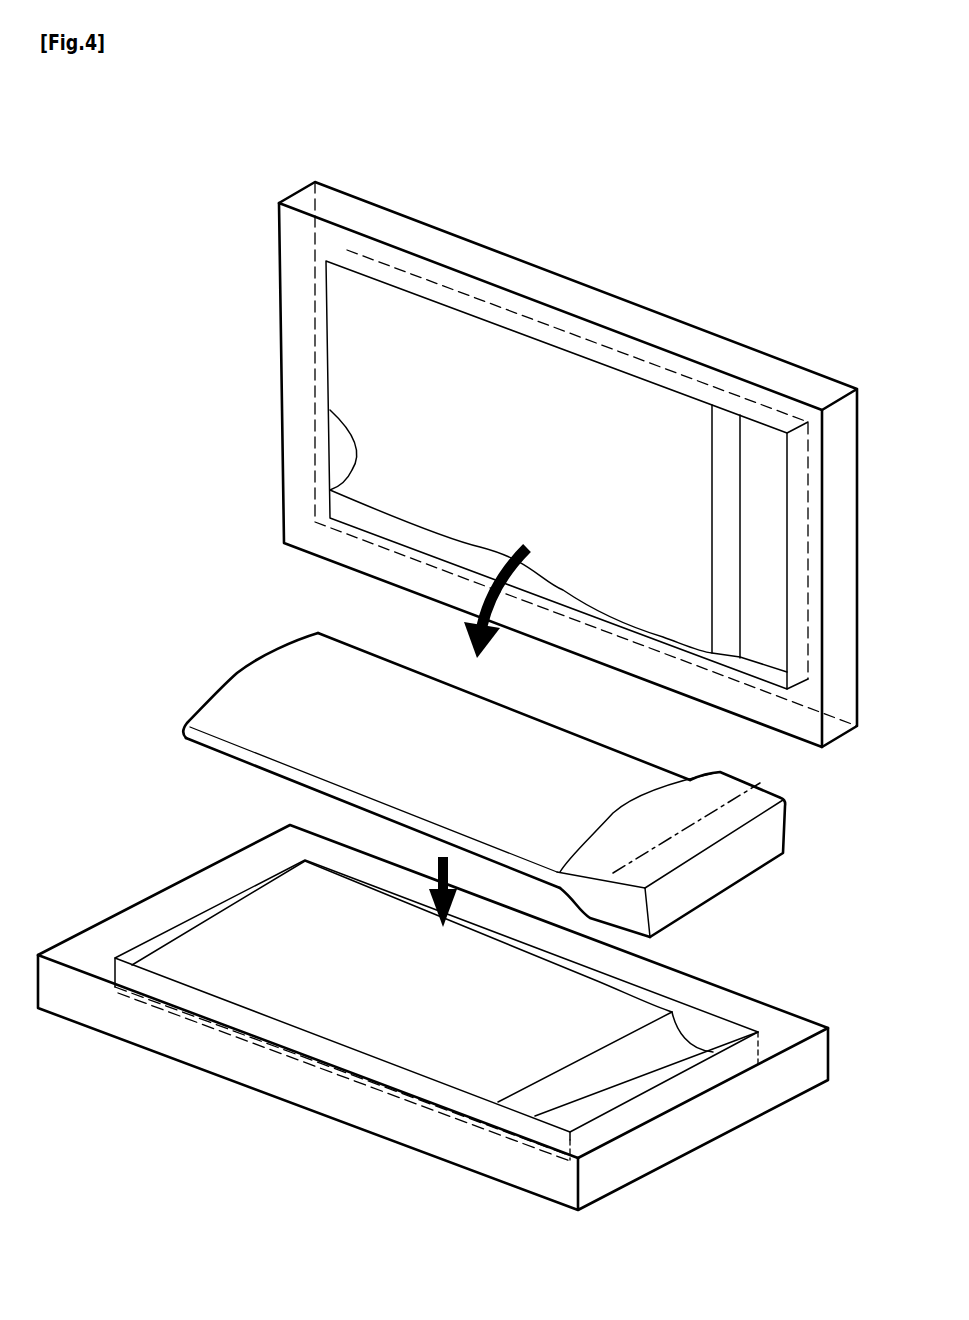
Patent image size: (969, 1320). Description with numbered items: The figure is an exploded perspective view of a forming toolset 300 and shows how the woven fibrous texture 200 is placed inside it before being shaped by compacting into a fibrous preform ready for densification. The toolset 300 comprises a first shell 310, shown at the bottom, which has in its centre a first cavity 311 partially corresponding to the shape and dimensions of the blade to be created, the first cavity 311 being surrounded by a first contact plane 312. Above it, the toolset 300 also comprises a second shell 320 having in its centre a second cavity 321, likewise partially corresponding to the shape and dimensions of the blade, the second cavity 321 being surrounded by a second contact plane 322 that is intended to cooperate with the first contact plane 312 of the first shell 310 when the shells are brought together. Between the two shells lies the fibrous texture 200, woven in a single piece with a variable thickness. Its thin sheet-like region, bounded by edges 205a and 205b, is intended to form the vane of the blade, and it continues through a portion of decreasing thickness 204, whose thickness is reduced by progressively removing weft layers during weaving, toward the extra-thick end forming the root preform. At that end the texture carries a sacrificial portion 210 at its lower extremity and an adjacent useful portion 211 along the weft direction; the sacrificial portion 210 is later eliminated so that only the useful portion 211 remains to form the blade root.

The fibrous texture 200 is at (257, 644).
The portion of decreasing thickness 204 is at (558, 883).
The first edge of film 205a is at (227, 747).
The second edge of film 205b is at (571, 735).
The sacrificial portion 210 is at (757, 801).
The useful portion 211 is at (725, 789).
The forming toolset 300 is at (115, 542).
The first shell 310 is at (157, 877).
The first cavity 311 is at (247, 940).
The first contact plane 312 is at (82, 945).
The second shell 320 is at (268, 509).
The second cavity 321 is at (360, 407).
The second contact plane 322 is at (298, 232).